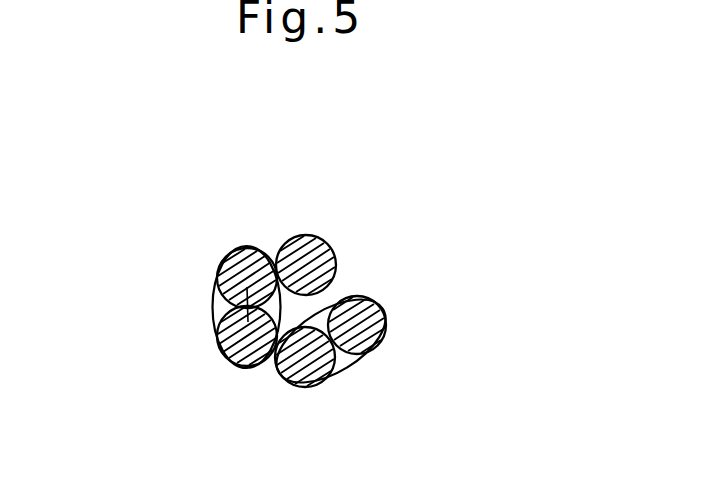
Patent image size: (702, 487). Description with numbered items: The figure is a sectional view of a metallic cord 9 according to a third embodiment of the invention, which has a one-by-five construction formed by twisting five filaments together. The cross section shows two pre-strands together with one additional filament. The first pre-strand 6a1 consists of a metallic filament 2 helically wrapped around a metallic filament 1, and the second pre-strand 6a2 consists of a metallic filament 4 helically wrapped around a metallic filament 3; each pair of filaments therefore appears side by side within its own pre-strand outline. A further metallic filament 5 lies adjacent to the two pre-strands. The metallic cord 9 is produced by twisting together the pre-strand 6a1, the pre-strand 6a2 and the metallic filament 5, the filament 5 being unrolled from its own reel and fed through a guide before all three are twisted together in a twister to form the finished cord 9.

The metallic filament 1 is at (348, 328).
The metallic filament 2 is at (314, 367).
The metallic filament 3 is at (244, 346).
The metallic filament 4 is at (238, 262).
The metallic filament 5 is at (322, 258).
The metallic cord 9 is at (302, 226).
The pre-strand 6a1 is at (465, 340).
The pre-strand 6a2 is at (168, 208).